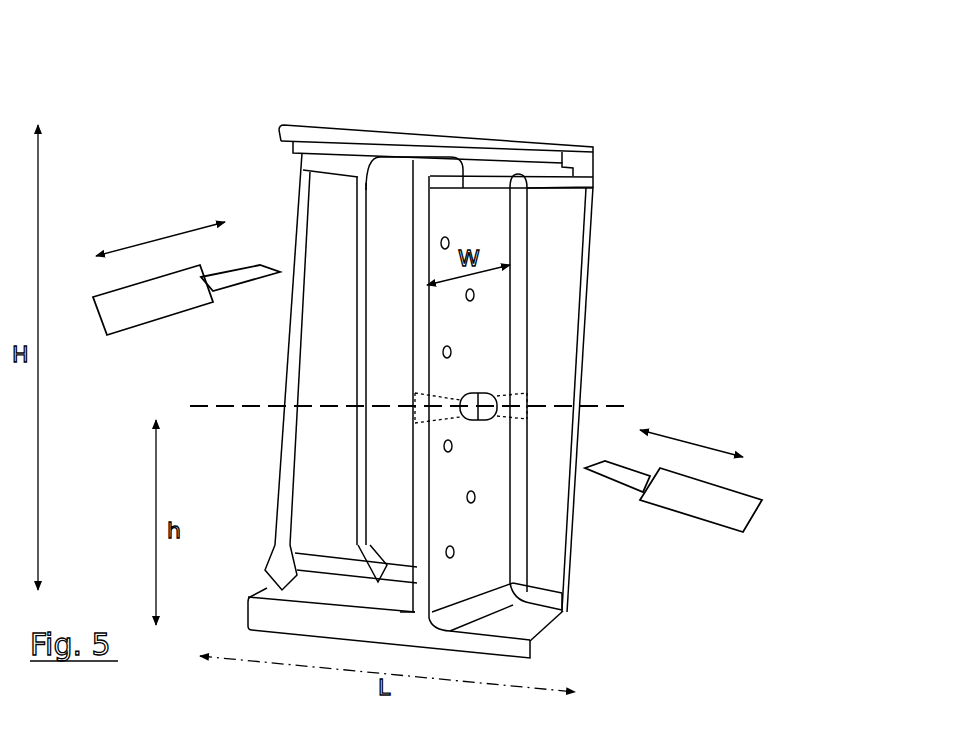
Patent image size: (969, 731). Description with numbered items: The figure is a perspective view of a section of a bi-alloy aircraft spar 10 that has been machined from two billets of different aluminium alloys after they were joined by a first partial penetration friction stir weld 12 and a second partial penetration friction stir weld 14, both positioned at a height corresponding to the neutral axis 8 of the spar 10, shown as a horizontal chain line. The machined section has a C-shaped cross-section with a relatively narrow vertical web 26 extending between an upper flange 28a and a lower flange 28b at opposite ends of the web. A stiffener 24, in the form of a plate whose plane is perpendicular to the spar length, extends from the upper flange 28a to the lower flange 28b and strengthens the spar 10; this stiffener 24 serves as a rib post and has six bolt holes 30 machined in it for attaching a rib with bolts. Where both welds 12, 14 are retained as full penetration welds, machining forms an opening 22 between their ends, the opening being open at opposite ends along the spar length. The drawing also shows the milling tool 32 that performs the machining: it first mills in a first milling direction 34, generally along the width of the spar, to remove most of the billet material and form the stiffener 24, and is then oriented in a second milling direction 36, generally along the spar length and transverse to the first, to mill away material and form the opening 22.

The neutral axis 8 is at (597, 398).
The bi-alloy aircraft spar 10 is at (553, 222).
The first partial penetration friction stir weld 12 is at (417, 395).
The second partial penetration friction stir weld 14 is at (519, 394).
The opening 22 is at (477, 393).
The stiffener 24 is at (490, 565).
The web 26 is at (540, 313).
The upper flange 28a is at (426, 140).
The lower flange 28b is at (513, 622).
The bolt holes 30 is at (474, 296).
The milling tool 32 is at (163, 303).
The first milling direction 34 is at (138, 245).
The second milling direction 36 is at (708, 448).